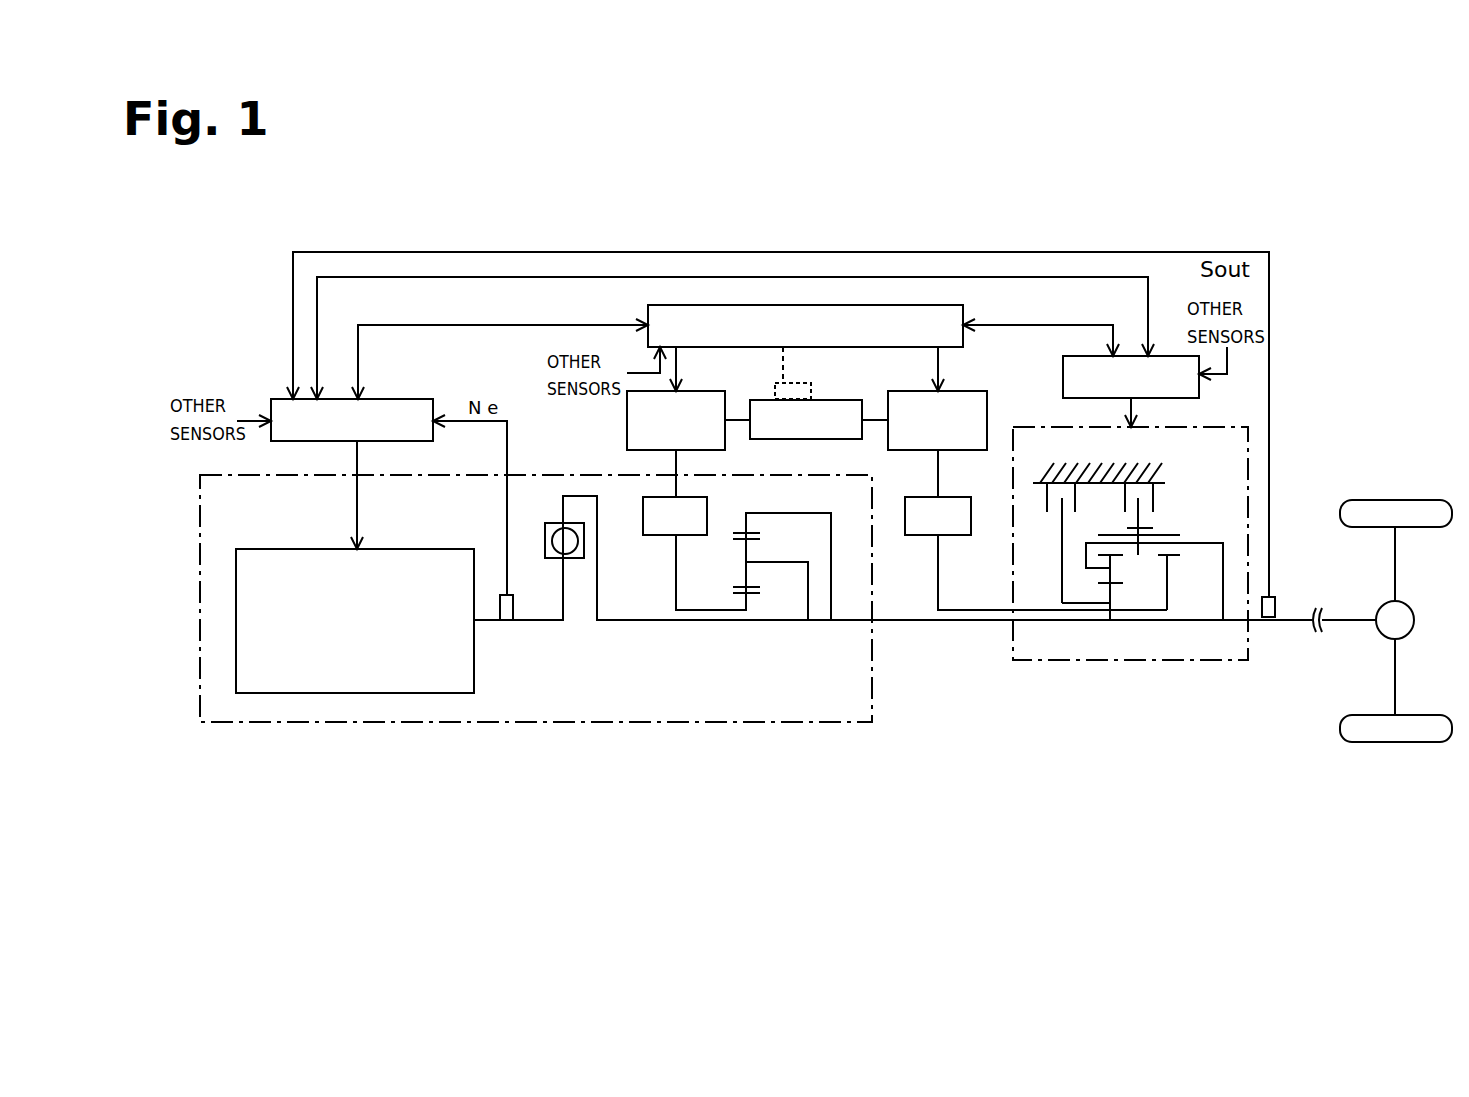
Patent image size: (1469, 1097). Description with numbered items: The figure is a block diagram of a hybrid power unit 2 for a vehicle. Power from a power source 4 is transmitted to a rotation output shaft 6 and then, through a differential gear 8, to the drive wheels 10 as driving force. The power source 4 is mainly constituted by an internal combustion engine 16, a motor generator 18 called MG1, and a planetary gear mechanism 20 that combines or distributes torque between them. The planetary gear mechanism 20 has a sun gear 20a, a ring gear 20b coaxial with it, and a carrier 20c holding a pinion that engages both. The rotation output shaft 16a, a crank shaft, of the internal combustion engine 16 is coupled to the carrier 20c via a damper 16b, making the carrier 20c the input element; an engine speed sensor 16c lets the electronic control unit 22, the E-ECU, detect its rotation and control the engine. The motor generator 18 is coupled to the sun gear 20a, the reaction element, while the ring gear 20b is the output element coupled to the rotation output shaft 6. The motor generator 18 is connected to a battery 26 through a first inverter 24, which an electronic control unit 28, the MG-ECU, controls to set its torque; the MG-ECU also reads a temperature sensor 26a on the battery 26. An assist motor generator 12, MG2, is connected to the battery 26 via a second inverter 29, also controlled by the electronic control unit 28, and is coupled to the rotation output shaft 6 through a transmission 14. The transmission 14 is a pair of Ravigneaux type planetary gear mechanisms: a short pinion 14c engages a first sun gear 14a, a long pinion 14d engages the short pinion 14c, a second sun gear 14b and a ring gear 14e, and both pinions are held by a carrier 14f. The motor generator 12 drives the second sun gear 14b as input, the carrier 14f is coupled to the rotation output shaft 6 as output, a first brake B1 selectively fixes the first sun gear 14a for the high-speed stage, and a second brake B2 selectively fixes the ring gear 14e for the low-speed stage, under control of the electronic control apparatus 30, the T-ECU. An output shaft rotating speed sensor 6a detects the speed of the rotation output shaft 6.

The hybrid power unit 2 is at (907, 708).
The power source 4 is at (793, 723).
The rotation output shaft 6 is at (1292, 625).
The output shaft rotating speed sensor 6a is at (1275, 597).
The differential gear 8 is at (1416, 620).
The drive wheels 10 is at (1393, 499).
The motor generator (MG2) 12 is at (923, 537).
The transmission 14 is at (1046, 587).
The first sun gear 14a is at (1116, 622).
The second sun gear 14b is at (1173, 560).
The short pinion 14c is at (1120, 582).
The long pinion 14d is at (1108, 532).
The ring gear 14e is at (1149, 528).
The carrier 14f is at (1204, 543).
The internal combustion engine 16 is at (432, 548).
The rotation output shaft (crank shaft) 16a is at (544, 622).
The damper 16b is at (553, 523).
The engine speed sensor 16c is at (513, 600).
The motor generator (MG1) 18 is at (657, 537).
The planetary gear mechanism 20 is at (753, 585).
The sun gear 20a is at (755, 596).
The ring gear 20b is at (742, 530).
The carrier 20c is at (777, 562).
The electronic control unit (E-ECU) 22 is at (405, 397).
The first inverter 24 is at (698, 391).
The battery 26 is at (850, 399).
The temperature sensor 26a is at (809, 373).
The electronic control unit (MG-ECU) 28 is at (965, 312).
The second inverter 29 is at (967, 391).
The electronic control apparatus (T-ECU) 30 is at (1063, 380).
The first brake B1 is at (1047, 502).
The second brake B2 is at (1162, 493).